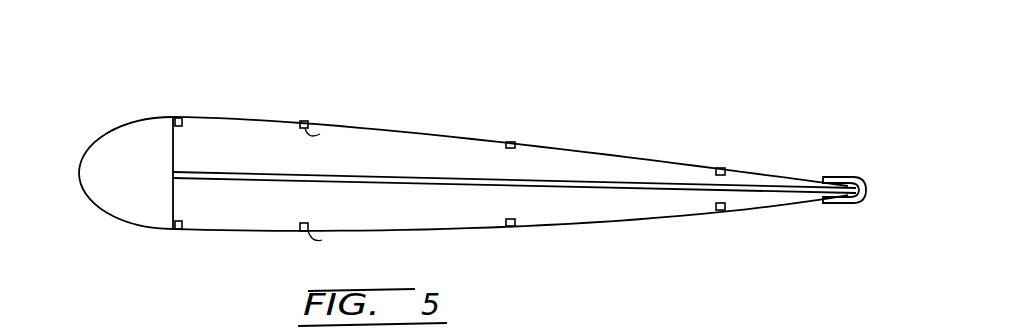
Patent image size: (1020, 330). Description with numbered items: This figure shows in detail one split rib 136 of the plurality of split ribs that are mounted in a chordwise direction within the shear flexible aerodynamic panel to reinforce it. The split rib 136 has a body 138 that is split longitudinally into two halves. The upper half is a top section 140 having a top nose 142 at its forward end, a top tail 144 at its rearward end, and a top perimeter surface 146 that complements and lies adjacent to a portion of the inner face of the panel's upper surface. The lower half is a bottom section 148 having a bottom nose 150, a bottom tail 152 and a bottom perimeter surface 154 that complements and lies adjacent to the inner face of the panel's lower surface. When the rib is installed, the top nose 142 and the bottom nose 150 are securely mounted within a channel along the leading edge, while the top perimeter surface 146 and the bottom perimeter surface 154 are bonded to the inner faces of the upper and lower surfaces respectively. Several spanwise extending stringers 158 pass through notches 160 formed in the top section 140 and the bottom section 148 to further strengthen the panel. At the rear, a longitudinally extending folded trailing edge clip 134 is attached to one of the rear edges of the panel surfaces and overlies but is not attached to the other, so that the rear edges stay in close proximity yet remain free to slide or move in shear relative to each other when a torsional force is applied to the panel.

The folded trailing edge clip 134 is at (865, 191).
The split rib 136 is at (650, 122).
The body 138 is at (690, 165).
The top section 140 is at (383, 143).
The top nose 142 is at (193, 130).
The top tail 144 is at (778, 182).
The top perimeter surface 146 is at (453, 135).
The bottom section 148 is at (440, 219).
The bottom nose 150 is at (203, 212).
The bottom tail 152 is at (750, 205).
The bottom perimeter surface 154 is at (560, 223).
The stringer 158 is at (307, 119).
The notch 160 is at (305, 128).